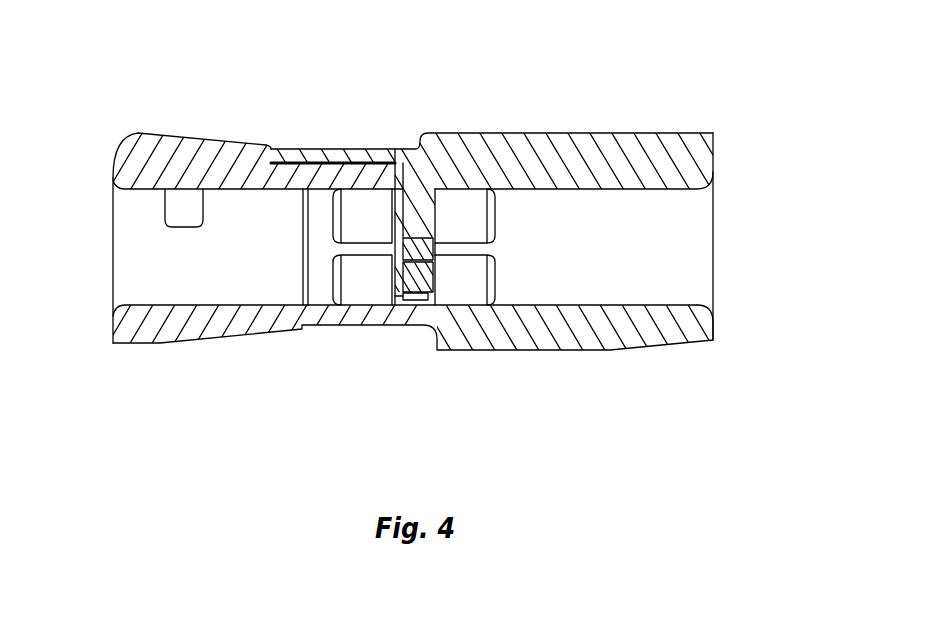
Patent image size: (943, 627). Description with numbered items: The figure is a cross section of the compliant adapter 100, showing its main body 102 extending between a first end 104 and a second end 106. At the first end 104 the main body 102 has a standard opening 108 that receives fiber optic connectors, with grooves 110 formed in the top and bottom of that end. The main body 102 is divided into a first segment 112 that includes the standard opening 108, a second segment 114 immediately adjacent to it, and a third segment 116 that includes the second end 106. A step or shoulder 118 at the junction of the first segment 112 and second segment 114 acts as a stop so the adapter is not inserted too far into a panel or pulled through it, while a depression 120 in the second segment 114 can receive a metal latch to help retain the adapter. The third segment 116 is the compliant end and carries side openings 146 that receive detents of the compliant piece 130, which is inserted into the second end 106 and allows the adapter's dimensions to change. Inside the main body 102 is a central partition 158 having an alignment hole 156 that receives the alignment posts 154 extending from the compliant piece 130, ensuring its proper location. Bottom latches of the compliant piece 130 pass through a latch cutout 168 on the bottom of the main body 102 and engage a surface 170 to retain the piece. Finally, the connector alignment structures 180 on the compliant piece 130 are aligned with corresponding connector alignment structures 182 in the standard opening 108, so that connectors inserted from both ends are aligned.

The compliant adapter 100 is at (733, 93).
The main body 102 is at (590, 350).
The first end 104 is at (714, 340).
The second end 106 is at (113, 345).
The standard opening 108 is at (715, 252).
The grooves 110 is at (703, 162).
The first segment 112 is at (630, 121).
The second segment 114 is at (351, 140).
The third segment 116 is at (234, 126).
The shoulder 118 is at (410, 148).
The depression 120 is at (342, 326).
The compliant piece 130 is at (180, 110).
The side openings 146 is at (188, 228).
The alignment posts 154 is at (437, 247).
The alignment hole 156 is at (417, 232).
The central partition 158 is at (406, 192).
The latch cutout 168 is at (426, 300).
The surface 170 is at (431, 302).
The connector alignment structures 180 is at (333, 209).
The connector alignment structures 182 is at (495, 220).